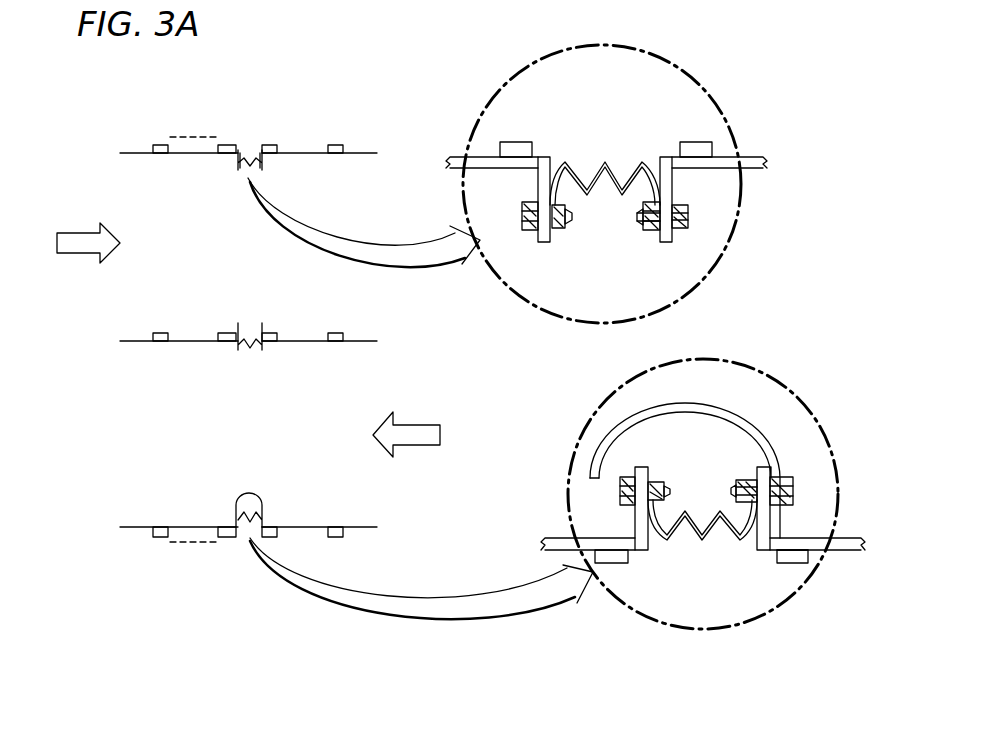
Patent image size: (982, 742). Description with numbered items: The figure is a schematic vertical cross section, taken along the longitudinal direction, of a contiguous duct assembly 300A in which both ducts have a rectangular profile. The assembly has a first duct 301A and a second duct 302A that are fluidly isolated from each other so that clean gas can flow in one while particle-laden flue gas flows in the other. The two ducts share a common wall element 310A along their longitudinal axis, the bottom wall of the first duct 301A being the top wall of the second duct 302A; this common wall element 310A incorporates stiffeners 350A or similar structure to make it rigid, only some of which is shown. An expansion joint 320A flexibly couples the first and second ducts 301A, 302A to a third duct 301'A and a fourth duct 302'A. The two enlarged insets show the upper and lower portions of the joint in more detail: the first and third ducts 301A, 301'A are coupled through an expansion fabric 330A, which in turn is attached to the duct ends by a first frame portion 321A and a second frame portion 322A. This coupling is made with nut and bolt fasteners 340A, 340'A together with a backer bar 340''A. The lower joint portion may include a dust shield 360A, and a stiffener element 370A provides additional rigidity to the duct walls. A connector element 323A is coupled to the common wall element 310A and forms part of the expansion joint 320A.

The contiguous duct assembly 300A is at (330, 52).
The first duct 301A is at (140, 200).
The third duct 301'A is at (749, 140).
The second duct 302A is at (140, 439).
The fourth duct 302'A is at (826, 580).
The common wall element 310A is at (196, 335).
The expansion joint 320A is at (248, 150).
The first frame portion 321A is at (556, 168).
The second frame portion 322A is at (652, 550).
The connector element 323A is at (246, 358).
The expansion fabric 330A is at (640, 170).
The nut and bolt fastener 340A is at (688, 215).
The nut and bolt fastener 340'A is at (600, 235).
The backer bar 340''A is at (609, 257).
The stiffener 350A is at (193, 137).
The dust shield 360A is at (612, 428).
The stiffener element 370A is at (790, 565).